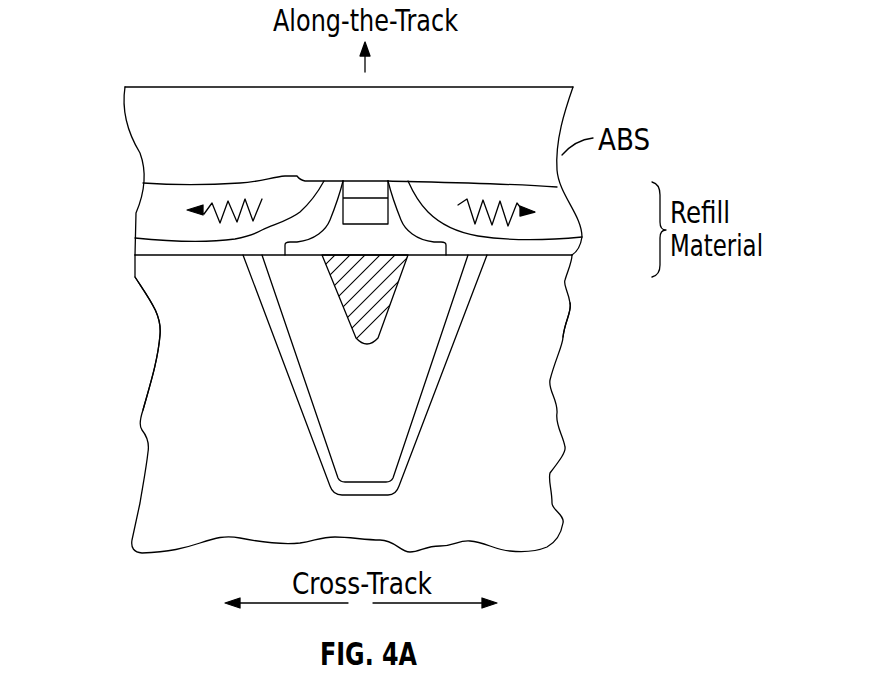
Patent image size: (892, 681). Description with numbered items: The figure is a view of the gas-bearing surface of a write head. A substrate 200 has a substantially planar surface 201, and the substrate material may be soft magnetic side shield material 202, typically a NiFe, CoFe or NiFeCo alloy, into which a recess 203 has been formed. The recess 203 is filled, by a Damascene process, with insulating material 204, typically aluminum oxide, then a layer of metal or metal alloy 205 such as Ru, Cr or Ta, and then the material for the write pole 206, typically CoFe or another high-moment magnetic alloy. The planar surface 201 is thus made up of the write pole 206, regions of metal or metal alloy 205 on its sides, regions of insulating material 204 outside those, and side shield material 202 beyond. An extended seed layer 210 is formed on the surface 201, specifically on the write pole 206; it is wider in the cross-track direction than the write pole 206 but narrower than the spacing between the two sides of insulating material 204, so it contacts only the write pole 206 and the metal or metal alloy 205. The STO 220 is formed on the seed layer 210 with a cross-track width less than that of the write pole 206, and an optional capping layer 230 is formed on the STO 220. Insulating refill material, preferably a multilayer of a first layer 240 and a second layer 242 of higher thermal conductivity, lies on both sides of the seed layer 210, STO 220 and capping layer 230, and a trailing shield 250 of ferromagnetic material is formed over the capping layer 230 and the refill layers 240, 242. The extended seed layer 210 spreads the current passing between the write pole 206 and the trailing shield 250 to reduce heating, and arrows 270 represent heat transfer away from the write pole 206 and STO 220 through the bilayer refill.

The substrate 200 is at (512, 503).
The substantially planar surface 201 is at (553, 258).
The side shield material 202 is at (152, 422).
The recess 203 is at (415, 453).
The insulating material 204 is at (384, 375).
The metal or metal alloy 205 is at (328, 420).
The write pole 206 is at (353, 295).
The extended seed layer 210 is at (405, 238).
The STO 220 is at (360, 207).
The capping layer 230 is at (350, 187).
The first layer 240 is at (147, 243).
The second layer 242 is at (148, 212).
The trailing shield 250 is at (448, 108).
The arrows 270 is at (232, 197).